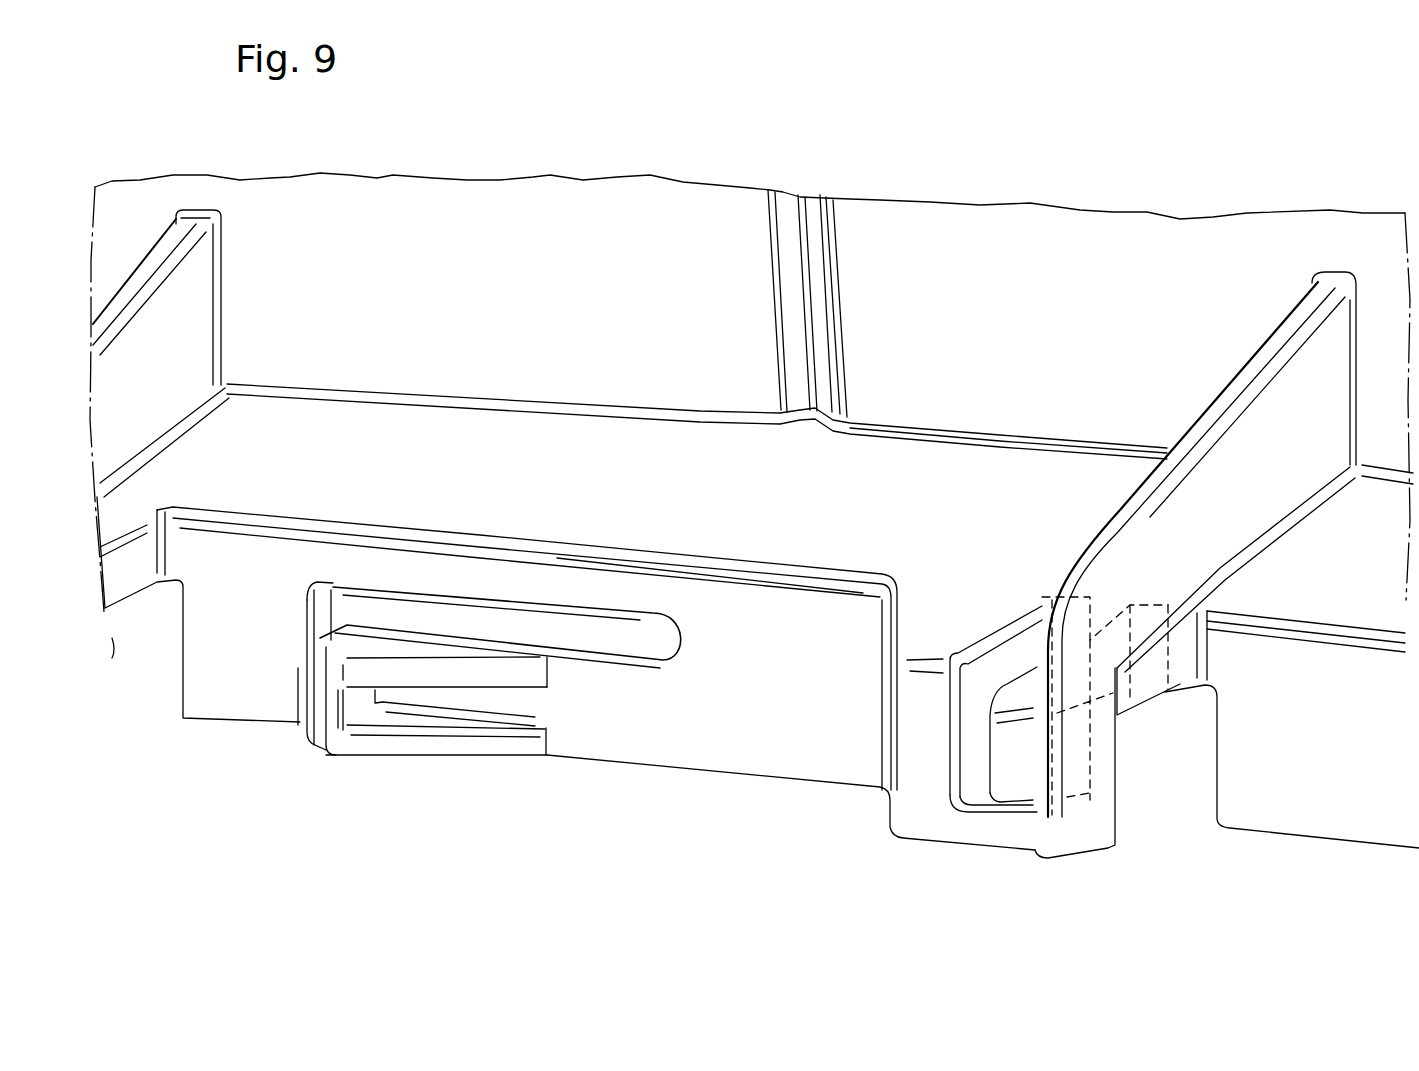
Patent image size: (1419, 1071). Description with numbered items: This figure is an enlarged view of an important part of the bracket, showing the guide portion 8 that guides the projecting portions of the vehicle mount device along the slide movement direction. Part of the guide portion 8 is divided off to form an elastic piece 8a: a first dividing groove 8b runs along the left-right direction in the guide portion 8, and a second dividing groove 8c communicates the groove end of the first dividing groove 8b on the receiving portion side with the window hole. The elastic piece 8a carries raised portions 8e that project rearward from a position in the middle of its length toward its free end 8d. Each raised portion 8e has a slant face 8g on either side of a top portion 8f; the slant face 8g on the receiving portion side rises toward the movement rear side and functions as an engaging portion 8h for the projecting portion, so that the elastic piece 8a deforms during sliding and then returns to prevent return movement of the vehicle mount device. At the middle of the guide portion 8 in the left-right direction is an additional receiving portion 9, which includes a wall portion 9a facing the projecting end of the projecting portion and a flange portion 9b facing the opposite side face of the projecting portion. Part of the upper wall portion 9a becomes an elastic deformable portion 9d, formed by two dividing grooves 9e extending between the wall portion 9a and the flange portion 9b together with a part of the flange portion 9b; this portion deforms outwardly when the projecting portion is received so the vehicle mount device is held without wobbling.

The guide portion 8 is at (793, 713).
The elastic piece 8a is at (467, 752).
The first dividing groove 8b is at (573, 627).
The second dividing groove 8c is at (310, 690).
The free end 8d is at (308, 745).
The raised portion 8e is at (387, 746).
The top portion 8f is at (333, 760).
The slant face 8g is at (430, 748).
The engaging portion 8h is at (310, 660).
The additional receiving portion 9 is at (933, 638).
The wall portion 9a is at (1133, 700).
The flange portion 9b is at (947, 823).
The elastic deformable portion 9d is at (1117, 650).
The dividing groove 9e is at (1018, 660).